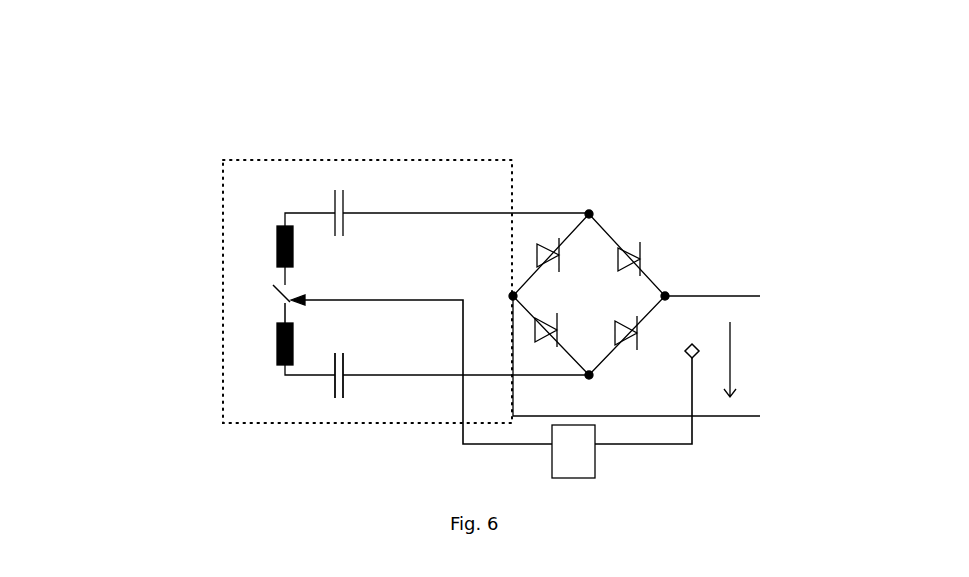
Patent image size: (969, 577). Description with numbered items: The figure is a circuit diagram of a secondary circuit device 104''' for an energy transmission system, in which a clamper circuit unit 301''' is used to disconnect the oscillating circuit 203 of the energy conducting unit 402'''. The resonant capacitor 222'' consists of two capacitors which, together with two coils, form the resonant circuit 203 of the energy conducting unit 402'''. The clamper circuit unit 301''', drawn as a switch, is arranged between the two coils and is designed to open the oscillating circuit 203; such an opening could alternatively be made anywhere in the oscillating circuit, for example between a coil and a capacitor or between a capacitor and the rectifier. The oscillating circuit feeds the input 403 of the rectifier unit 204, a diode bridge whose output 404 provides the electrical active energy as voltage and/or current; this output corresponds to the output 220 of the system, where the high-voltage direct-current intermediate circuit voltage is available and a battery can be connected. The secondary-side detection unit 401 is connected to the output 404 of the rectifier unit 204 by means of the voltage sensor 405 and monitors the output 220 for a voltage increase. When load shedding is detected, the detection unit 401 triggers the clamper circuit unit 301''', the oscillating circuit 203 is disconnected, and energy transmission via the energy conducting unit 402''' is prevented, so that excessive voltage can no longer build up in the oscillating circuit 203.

The secondary circuit device 104''' is at (406, 293).
The energy conducting unit 402''' is at (394, 251).
The resonant capacitor 222'' is at (416, 265).
The clamper circuit unit 301''' is at (338, 270).
The oscillating circuit 203 is at (360, 383).
The secondary-side detection unit 401 is at (595, 458).
The voltage sensor 405 is at (693, 340).
The rectifier input 403 is at (604, 247).
The rectifier unit 204 is at (617, 247).
The rectifier output 404 is at (690, 267).
The system output 220 is at (790, 285).